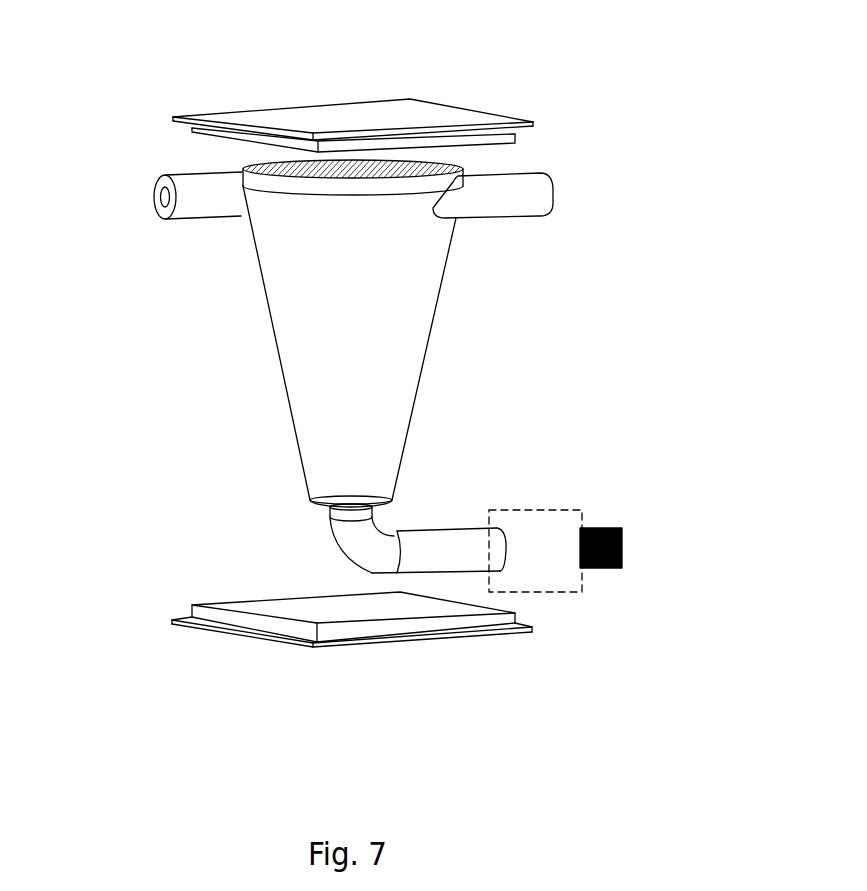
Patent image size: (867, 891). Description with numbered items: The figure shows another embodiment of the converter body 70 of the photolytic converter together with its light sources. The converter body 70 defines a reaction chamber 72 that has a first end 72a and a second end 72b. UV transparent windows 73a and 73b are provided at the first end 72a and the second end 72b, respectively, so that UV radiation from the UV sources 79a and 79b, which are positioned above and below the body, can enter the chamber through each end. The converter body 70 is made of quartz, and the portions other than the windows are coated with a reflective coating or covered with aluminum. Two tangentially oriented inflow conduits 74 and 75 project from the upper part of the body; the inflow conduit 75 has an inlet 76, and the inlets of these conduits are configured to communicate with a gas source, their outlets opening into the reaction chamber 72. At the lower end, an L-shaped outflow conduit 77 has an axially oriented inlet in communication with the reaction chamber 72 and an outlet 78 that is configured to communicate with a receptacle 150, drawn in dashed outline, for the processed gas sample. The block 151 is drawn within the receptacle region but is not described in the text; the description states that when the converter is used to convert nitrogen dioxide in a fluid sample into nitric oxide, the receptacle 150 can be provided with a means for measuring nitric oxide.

The converter body 70 is at (577, 118).
The reaction chamber 72 is at (440, 312).
The first end 72a is at (457, 167).
The second end 72b is at (393, 502).
The UV transparent window 73a is at (252, 162).
The UV transparent window 73b is at (327, 508).
The inflow conduit 74 is at (498, 202).
The inflow conduit 75 is at (207, 217).
The inlet 76 is at (156, 196).
The L-shaped outflow conduit 77 is at (337, 550).
The outlet 78 is at (502, 540).
The UV source 79a is at (410, 99).
The UV source 79b is at (437, 638).
The receptacle 150 is at (550, 508).
The valve block 151 is at (622, 545).